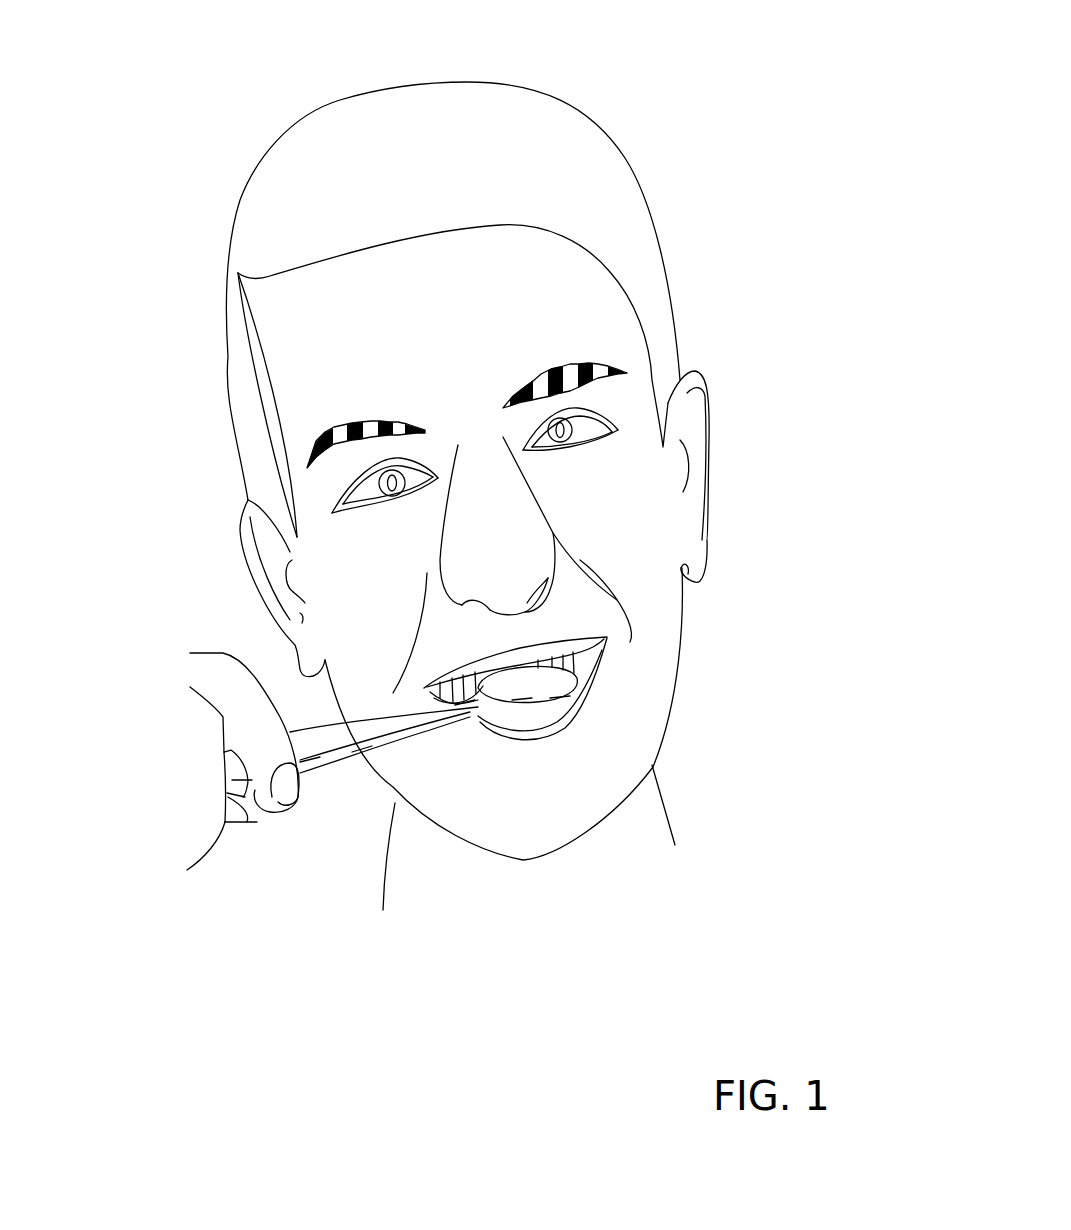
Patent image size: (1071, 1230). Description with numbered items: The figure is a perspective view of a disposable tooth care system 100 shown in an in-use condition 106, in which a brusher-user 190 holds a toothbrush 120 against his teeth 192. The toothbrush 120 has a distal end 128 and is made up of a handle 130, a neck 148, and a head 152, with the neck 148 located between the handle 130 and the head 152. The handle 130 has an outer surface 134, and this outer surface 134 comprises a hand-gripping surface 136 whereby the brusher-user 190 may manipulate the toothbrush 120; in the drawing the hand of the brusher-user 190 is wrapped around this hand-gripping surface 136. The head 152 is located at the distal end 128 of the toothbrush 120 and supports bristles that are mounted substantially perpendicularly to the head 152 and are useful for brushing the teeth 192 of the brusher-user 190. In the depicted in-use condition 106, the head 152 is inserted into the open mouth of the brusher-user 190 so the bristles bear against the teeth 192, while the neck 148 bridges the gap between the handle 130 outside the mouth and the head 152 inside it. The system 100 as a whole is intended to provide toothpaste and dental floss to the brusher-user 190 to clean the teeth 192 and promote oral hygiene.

The disposable tooth care system 100 is at (729, 104).
The brusher-user 190 is at (645, 270).
The teeth 192 is at (578, 653).
The in-use condition 106 is at (168, 622).
The outer surface 134 is at (348, 756).
The hand-gripping surface 136 is at (242, 790).
The toothbrush 120 is at (310, 770).
The handle 130 is at (362, 762).
The neck 148 is at (465, 714).
The head 152 is at (522, 692).
The distal end 128 is at (561, 688).